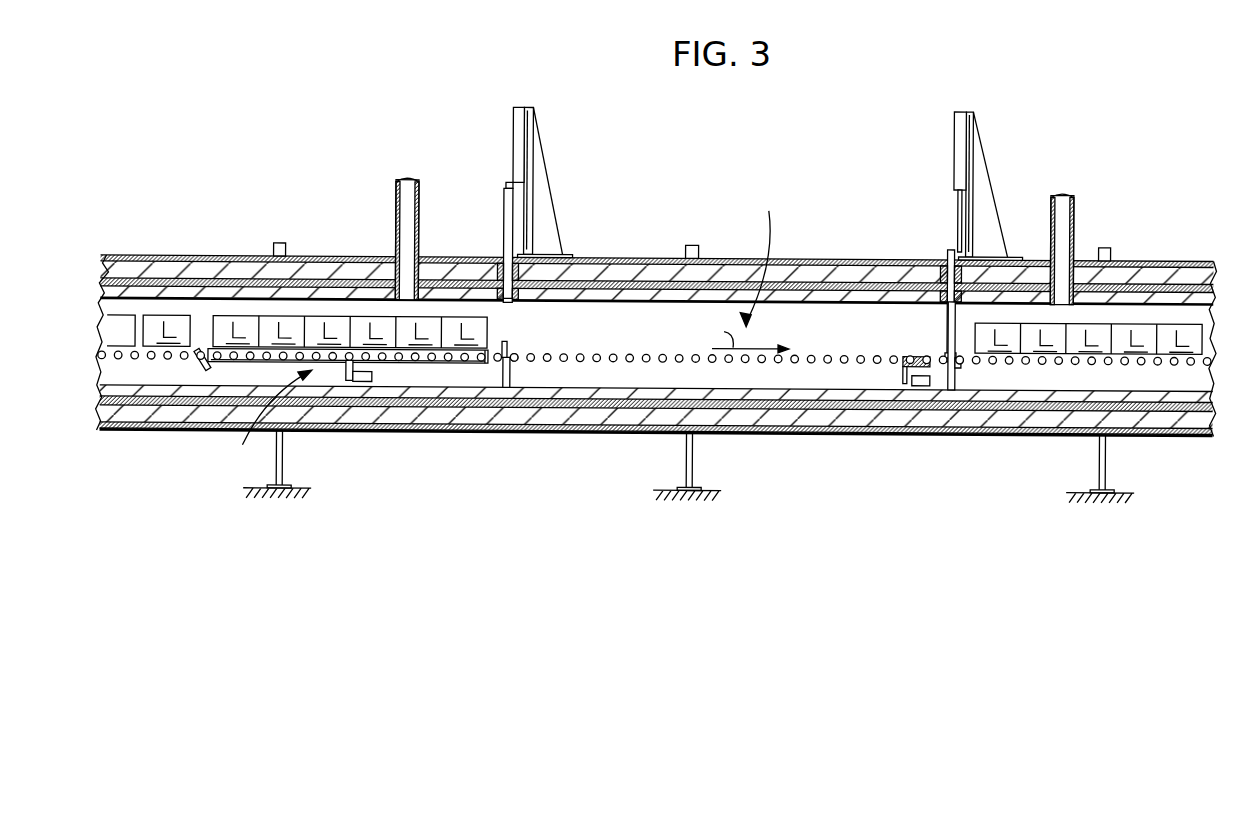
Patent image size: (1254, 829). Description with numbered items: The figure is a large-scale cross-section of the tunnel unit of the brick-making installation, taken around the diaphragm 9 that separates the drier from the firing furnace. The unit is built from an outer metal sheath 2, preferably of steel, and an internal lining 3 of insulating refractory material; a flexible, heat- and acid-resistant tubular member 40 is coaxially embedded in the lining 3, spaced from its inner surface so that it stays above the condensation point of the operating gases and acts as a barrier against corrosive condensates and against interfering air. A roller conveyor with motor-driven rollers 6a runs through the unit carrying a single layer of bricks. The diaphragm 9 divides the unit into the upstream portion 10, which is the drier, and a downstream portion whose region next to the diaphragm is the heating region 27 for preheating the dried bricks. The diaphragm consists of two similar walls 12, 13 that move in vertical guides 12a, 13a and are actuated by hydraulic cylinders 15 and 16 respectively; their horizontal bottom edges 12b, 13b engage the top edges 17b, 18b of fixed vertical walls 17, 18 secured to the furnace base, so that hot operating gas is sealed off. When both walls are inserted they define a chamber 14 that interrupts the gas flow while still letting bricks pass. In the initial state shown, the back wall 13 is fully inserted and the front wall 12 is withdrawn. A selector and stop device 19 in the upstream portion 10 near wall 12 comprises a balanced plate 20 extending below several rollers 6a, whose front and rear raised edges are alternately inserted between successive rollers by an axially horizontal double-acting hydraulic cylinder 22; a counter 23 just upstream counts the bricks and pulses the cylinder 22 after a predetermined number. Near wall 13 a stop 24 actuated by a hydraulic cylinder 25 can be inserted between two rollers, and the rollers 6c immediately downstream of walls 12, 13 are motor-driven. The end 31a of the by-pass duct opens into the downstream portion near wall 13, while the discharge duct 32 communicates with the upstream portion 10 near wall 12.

The outer metal sheath 2 is at (234, 260).
The internal lining 3 is at (340, 277).
The tubular member 40 is at (257, 287).
The motor-driven rollers 6a is at (283, 362).
The rollers 6c is at (516, 360).
The diaphragm 9 is at (757, 258).
The upstream portion 10 is at (203, 312).
The wall 12 is at (503, 205).
The vertical guides 12a is at (505, 298).
The horizontal bottom edge 12b is at (512, 301).
The wall 13 is at (945, 312).
The vertical guides 13a is at (940, 268).
The horizontal bottom edge 13b is at (951, 356).
The chamber 14 is at (668, 332).
The hydraulic cylinder 15 is at (517, 140).
The hydraulic cylinder 16 is at (955, 158).
The vertical wall 17 is at (506, 374).
The top edge 17b is at (520, 337).
The vertical wall 18 is at (950, 390).
The top edge 18b is at (958, 366).
The selector and stop device 19 is at (258, 423).
The plate 20 is at (432, 366).
The double-acting hydraulic cylinder 22 is at (355, 378).
The counter 23 is at (196, 364).
The stop 24 is at (905, 356).
The hydraulic cylinder 25 is at (913, 385).
The heating region 27 is at (1147, 320).
The duct end 31a is at (1065, 225).
The discharge duct 32 is at (402, 240).